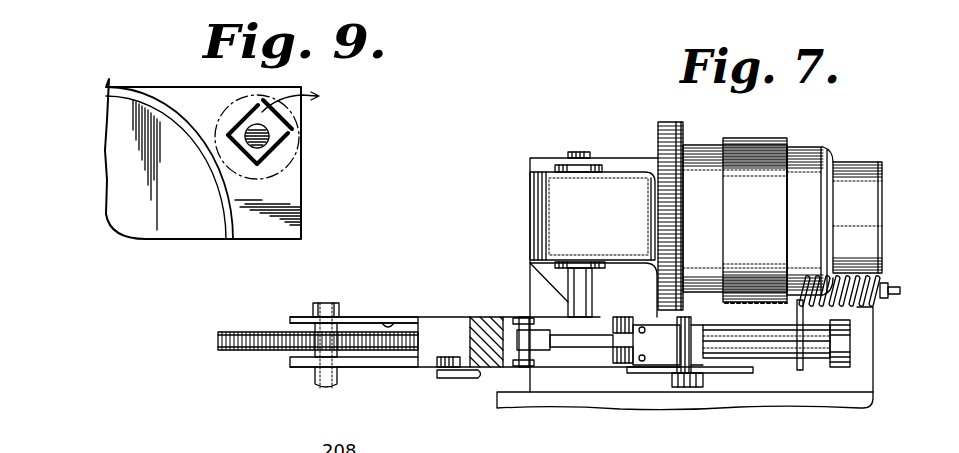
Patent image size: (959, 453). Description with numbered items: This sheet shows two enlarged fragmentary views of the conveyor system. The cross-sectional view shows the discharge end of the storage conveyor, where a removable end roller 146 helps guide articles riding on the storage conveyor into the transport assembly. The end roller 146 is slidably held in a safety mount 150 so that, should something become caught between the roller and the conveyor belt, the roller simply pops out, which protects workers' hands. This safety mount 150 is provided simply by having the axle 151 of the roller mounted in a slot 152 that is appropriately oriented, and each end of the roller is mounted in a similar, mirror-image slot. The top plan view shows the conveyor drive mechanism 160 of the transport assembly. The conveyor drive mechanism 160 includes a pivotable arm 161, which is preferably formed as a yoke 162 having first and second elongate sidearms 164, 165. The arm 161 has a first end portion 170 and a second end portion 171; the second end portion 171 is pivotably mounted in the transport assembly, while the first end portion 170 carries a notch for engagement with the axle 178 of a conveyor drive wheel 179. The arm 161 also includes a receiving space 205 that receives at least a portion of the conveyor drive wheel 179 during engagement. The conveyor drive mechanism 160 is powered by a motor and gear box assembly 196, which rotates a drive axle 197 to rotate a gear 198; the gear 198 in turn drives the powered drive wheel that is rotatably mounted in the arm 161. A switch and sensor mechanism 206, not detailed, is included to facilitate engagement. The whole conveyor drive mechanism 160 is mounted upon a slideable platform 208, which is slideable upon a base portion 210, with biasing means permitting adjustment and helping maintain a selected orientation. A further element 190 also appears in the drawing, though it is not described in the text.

In FIG. 9, the end roller 146 is at (277, 172).
In FIG. 9, the safety mount 150 is at (266, 143).
In FIG. 9, the axle 151 is at (245, 130).
In FIG. 9, the slot 152 is at (283, 98).
In FIG. 7, the conveyor drive mechanism 160 is at (883, 163).
In FIG. 7, the pivotable arm 161 is at (452, 317).
In FIG. 7, the yoke 162 is at (483, 305).
In FIG. 7, the first elongate sidearm 164 is at (387, 372).
In FIG. 7, the second elongate sidearm 165 is at (354, 304).
In FIG. 7, the first end portion 170 is at (291, 318).
In FIG. 7, the second end portion 171 is at (614, 367).
In FIG. 7, the axle 178 is at (337, 384).
In FIG. 7, the conveyor drive wheel 179 is at (219, 350).
In FIG. 7, the plunger rod 190 is at (766, 333).
In FIG. 7, the motor and gear box assembly 196 is at (739, 145).
In FIG. 7, the drive axle 197 is at (580, 296).
In FIG. 7, the gear 198 is at (613, 334).
In FIG. 7, the receiving space 205 is at (388, 324).
In FIG. 7, the switch and sensor mechanism 206 is at (470, 380).
In FIG. 7, the slideable platform 208 is at (783, 372).
In FIG. 7, the base portion 210 is at (867, 352).